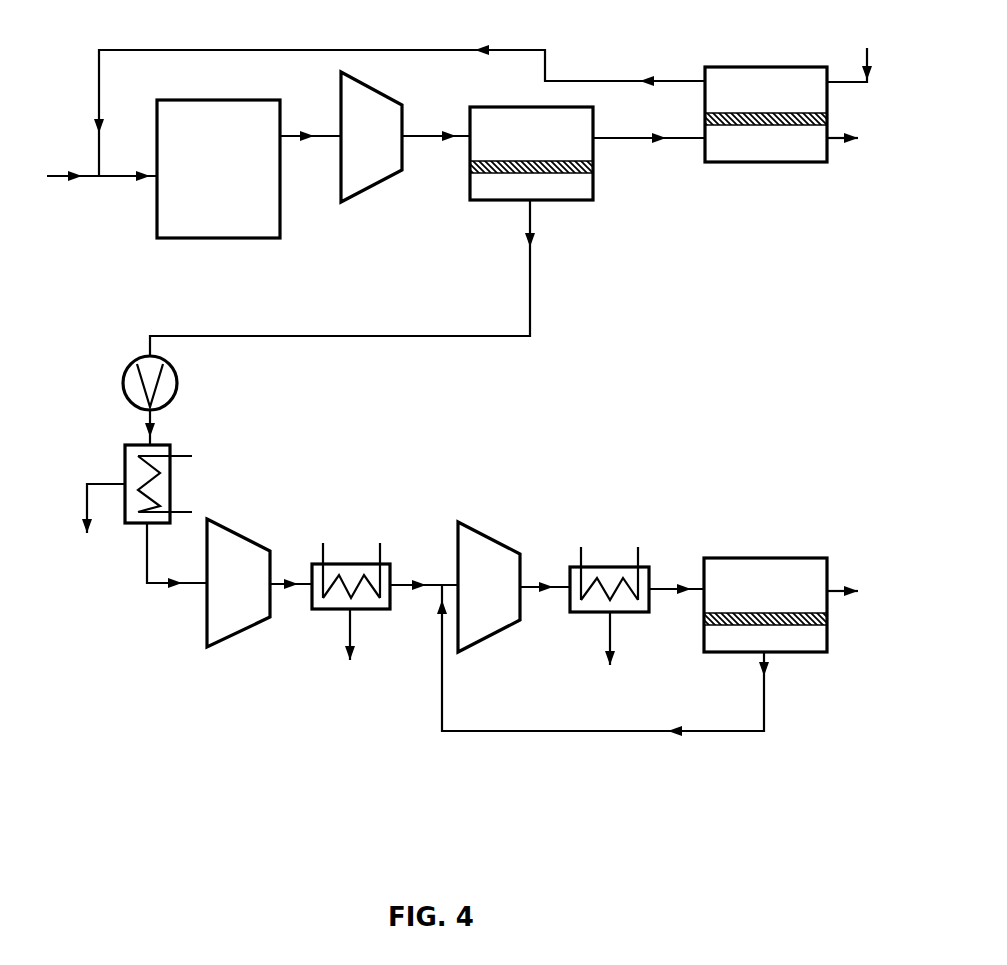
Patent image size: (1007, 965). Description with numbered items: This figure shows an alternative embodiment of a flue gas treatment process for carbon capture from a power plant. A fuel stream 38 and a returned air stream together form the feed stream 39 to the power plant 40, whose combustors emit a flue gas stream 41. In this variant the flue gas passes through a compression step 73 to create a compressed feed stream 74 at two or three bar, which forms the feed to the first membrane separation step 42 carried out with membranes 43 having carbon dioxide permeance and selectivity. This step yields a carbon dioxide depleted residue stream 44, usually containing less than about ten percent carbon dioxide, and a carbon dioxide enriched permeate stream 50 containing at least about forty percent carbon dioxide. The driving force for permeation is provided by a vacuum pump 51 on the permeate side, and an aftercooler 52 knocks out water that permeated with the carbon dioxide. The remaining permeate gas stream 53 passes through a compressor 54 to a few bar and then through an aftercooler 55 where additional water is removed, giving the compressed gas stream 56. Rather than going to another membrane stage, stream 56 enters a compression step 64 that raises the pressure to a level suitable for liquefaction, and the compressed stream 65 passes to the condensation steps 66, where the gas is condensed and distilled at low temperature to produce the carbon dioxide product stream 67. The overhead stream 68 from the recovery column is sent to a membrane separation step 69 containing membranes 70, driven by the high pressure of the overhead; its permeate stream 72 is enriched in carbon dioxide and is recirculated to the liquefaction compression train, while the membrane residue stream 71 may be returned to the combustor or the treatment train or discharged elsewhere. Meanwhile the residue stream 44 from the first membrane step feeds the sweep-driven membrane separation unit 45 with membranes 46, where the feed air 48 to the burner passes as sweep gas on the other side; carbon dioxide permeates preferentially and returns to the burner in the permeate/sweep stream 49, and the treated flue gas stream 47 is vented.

The fuel stream 38 is at (66, 166).
The feed stream to power plant 39 is at (128, 166).
The power plant 40 is at (212, 238).
The flue gas stream 41 is at (310, 126).
The first membrane separation step 42 is at (563, 153).
The membranes 43 is at (502, 138).
The carbon dioxide depleted residue stream 44 is at (649, 129).
The sweep-driven membrane separation unit 45 is at (766, 142).
The membranes 46 is at (745, 112).
The treated flue gas stream 47 is at (856, 143).
The feed air 48 is at (853, 53).
The permeate/sweep stream 49 is at (399, 110).
The carbon dioxide enriched permeate stream 50 is at (358, 278).
The vacuum pump 51 is at (177, 386).
The aftercooler 52 is at (170, 486).
The remaining permeate gas stream 53 is at (177, 555).
The compressor 54 is at (238, 632).
The aftercooler 55 is at (362, 564).
The compressed gas stream 56 is at (424, 573).
The compression step 64 is at (498, 537).
The compressed stream 65 is at (545, 574).
The condensation steps 66 is at (617, 567).
The carbon dioxide product stream 67 is at (610, 652).
The overhead stream 68 is at (676, 576).
The membrane separation step 69 is at (765, 577).
The membranes 70 is at (745, 612).
The membrane residue stream 71 is at (856, 594).
The permeate stream 72 is at (603, 661).
The compression step 73 is at (372, 186).
The compressed feed stream 74 is at (436, 126).